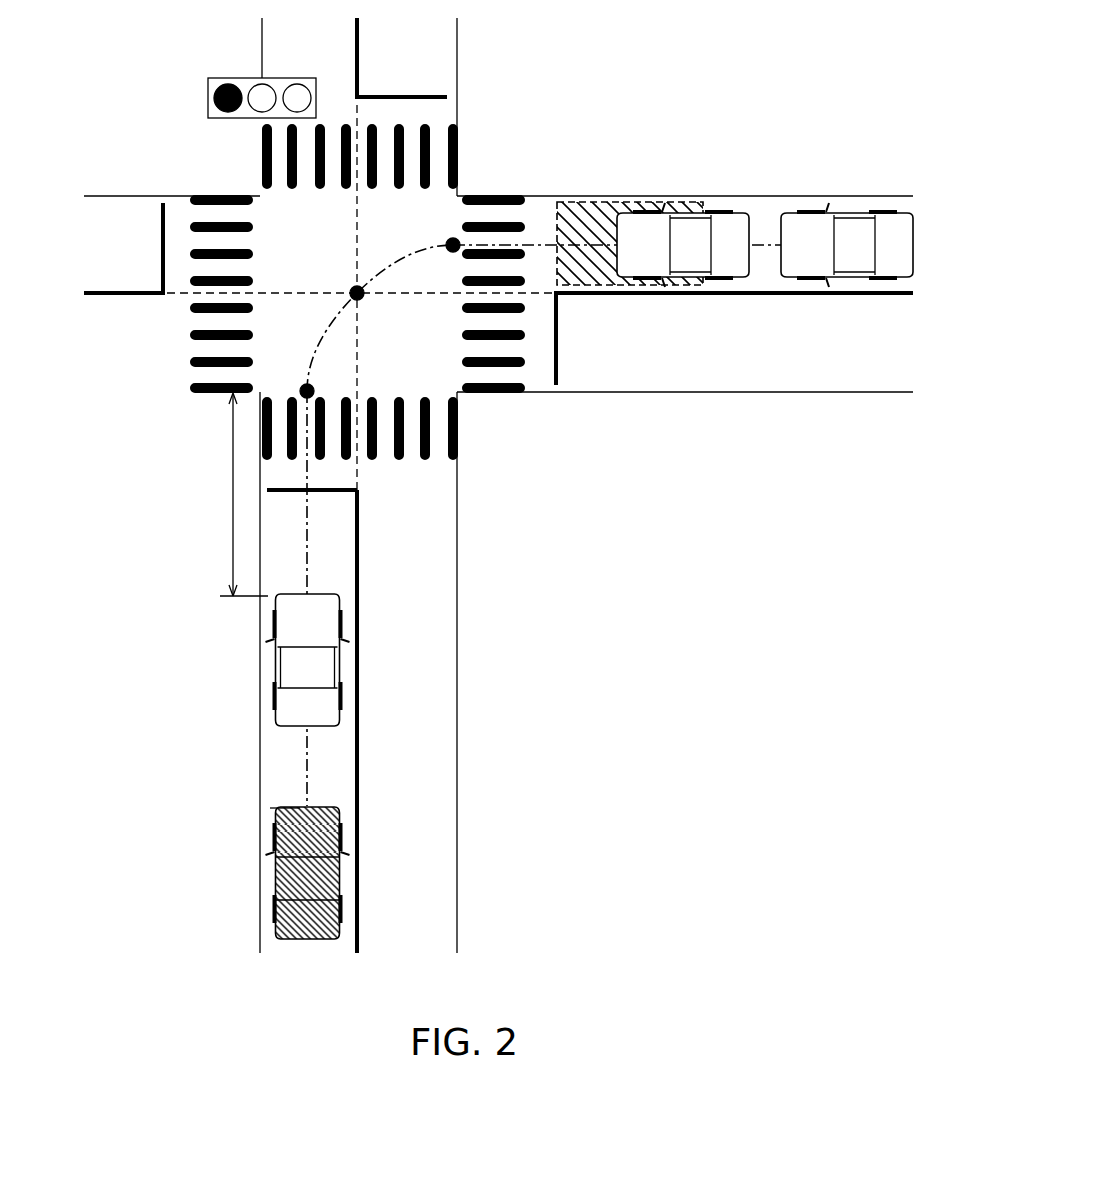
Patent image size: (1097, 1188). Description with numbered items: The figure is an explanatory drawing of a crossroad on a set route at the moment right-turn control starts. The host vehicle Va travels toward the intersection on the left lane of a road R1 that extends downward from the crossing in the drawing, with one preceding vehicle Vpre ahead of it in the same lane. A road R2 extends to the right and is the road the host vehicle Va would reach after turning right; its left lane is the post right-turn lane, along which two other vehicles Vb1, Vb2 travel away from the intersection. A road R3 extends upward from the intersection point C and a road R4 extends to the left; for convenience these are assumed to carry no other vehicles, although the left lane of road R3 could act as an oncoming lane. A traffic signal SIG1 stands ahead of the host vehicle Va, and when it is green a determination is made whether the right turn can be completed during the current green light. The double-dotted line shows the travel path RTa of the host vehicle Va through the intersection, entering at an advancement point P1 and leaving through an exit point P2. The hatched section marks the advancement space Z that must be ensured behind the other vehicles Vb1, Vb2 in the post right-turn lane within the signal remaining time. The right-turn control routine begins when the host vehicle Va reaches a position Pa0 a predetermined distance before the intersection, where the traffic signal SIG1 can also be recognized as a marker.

The traffic signal SIG1 is at (208, 90).
The road R4 is at (126, 195).
The road R3 is at (457, 62).
The road R2 is at (745, 393).
The road R1 is at (458, 736).
The exit point P2 is at (449, 244).
The intersection center point C is at (352, 291).
The travel path RTa is at (363, 318).
The advancement point P1 is at (304, 391).
The advancement space Z is at (648, 203).
The other vehicle Vb1 is at (690, 211).
The other vehicle Vb2 is at (845, 211).
The preceding vehicle Vpre is at (275, 658).
The position Pa0 is at (272, 810).
The host vehicle Va is at (275, 872).